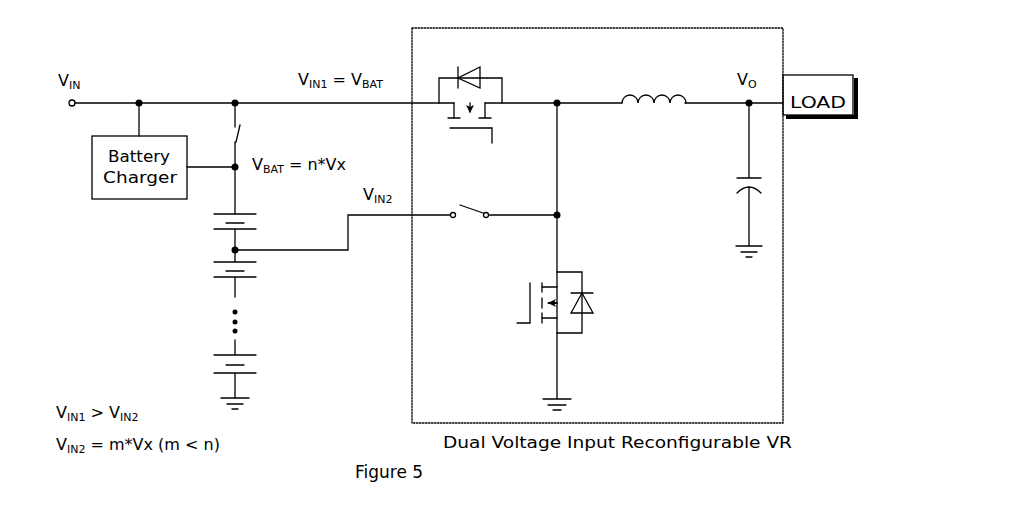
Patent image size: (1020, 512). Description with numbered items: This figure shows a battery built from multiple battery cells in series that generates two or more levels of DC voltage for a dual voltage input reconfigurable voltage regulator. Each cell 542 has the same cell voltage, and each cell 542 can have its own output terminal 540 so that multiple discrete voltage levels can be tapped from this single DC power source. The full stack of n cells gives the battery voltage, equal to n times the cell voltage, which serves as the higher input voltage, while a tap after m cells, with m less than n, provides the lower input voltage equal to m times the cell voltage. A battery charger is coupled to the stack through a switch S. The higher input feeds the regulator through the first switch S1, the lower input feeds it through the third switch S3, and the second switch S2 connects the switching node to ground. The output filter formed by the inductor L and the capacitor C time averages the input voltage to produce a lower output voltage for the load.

The output terminal 540 is at (268, 157).
The cell 542 is at (129, 226).
The charger switch S is at (225, 135).
The first switch (high-side MOSFET) S1 is at (470, 90).
The second switch (low-side MOSFET) S2 is at (570, 302).
The third switch S3 is at (504, 194).
The inductor L is at (654, 84).
The capacitor C is at (735, 180).